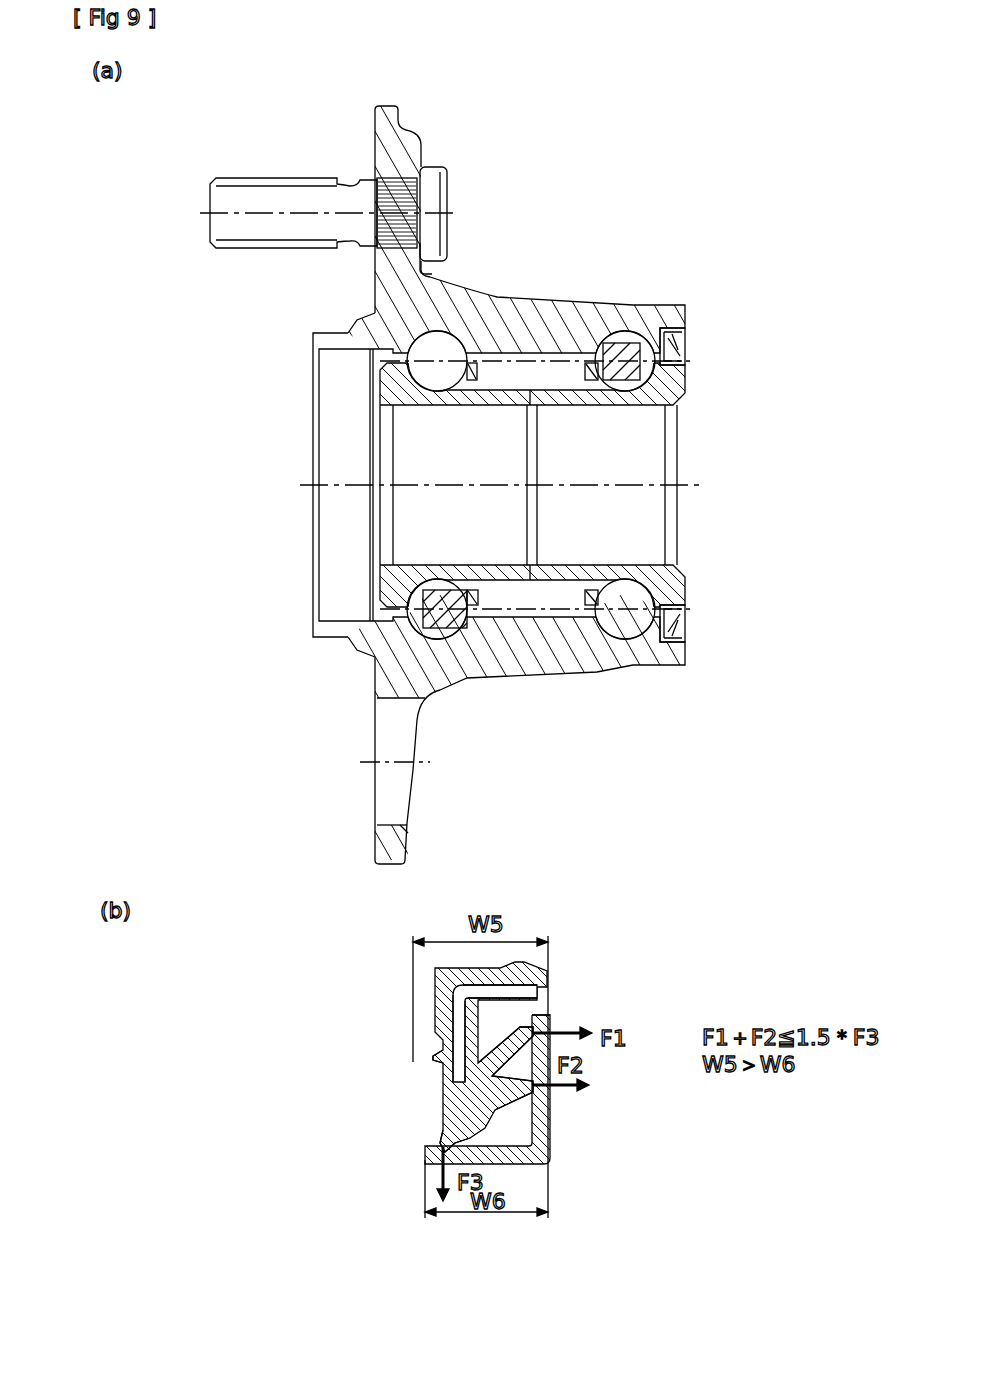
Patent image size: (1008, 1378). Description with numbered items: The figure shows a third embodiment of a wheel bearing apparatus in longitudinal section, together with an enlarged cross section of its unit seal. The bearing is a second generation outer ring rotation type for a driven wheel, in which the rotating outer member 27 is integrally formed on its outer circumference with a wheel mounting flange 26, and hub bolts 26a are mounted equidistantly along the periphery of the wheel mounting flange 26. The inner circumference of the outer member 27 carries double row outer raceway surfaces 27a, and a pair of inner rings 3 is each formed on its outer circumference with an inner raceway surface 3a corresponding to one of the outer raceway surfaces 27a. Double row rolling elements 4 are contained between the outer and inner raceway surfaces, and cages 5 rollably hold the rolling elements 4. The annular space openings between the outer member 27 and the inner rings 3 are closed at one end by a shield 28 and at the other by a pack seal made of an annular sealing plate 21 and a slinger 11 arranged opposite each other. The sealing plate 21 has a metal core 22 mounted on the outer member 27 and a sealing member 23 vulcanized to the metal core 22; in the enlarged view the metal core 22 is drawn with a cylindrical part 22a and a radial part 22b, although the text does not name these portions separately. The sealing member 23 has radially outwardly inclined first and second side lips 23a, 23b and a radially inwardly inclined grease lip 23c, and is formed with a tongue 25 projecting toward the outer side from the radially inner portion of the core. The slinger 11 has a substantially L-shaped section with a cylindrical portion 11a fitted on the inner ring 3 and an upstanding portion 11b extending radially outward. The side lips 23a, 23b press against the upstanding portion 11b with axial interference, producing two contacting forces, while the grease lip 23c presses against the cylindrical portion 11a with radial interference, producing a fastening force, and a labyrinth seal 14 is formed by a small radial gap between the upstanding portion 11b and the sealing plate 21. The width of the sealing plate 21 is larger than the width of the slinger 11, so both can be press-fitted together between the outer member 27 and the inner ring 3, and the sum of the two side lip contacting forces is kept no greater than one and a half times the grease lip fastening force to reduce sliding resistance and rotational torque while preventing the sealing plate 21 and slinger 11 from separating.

The wheel mounting flange 26 is at (386, 106).
The hub bolt 26a is at (268, 186).
The outer member 27 is at (504, 689).
The outer raceway surface 27a is at (447, 352).
The shield 28 is at (372, 353).
The inner ring 3 is at (504, 689).
The inner raceway surface 3a is at (426, 396).
The rolling element 4 is at (442, 642).
The cage 5 is at (470, 578).
The sealing plate 21 is at (504, 689).
The metal core 22 is at (407, 1021).
The cylindrical portion of core metal 22a is at (440, 970).
The radial portion of core metal 22b is at (455, 1028).
The sealing member 23 is at (504, 689).
The first side lip 23a is at (500, 1066).
The second side lip 23b is at (500, 1100).
The grease lip 23c is at (470, 1136).
The tongue 25 is at (430, 1058).
The slinger 11 is at (504, 689).
The cylindrical portion 11a is at (546, 1153).
The upstanding portion 11b is at (542, 1097).
The labyrinth seal 14 is at (540, 1008).